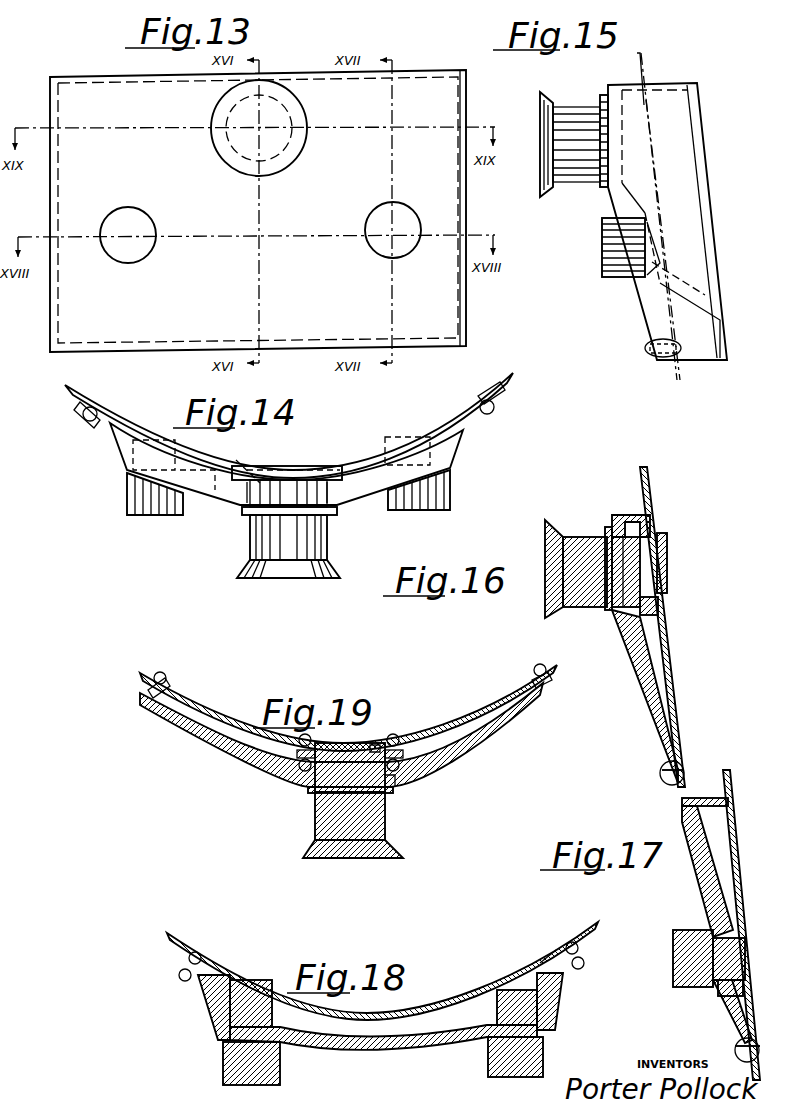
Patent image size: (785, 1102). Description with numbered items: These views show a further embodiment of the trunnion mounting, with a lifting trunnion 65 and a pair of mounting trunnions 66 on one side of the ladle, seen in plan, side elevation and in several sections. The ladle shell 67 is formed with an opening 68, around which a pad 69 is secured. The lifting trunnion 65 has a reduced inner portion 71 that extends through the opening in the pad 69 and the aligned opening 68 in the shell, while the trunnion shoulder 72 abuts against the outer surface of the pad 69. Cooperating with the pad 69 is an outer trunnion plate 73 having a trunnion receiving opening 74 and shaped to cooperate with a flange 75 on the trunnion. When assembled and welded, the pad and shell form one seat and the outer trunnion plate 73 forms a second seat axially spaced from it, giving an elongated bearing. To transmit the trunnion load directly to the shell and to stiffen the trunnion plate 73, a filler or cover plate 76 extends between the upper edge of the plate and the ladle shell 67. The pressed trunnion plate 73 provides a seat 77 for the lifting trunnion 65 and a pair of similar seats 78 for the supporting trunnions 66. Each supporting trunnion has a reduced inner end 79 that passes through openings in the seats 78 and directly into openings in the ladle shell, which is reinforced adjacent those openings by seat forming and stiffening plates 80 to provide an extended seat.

In FIG. 13, the lifting trunnion 65 is at (243, 143).
In FIG. 15, the lifting trunnion 65 is at (588, 86).
In FIG. 14, the lifting trunnion 65 is at (323, 530).
In FIG. 16, the lifting trunnion 65 is at (583, 600).
In FIG. 19, the lifting trunnion 65 is at (315, 823).
In FIG. 13, the mounting trunnion 66 is at (137, 246).
In FIG. 15, the mounting trunnion 66 is at (606, 247).
In FIG. 14, the mounting trunnion 66 is at (127, 495).
In FIG. 17, the mounting trunnion 66 is at (673, 933).
In FIG. 18, the mounting trunnion 66 is at (280, 1073).
In FIG. 15, the ladle shell 67 is at (658, 216).
In FIG. 14, the ladle shell 67 is at (510, 378).
In FIG. 16, the ladle shell 67 is at (668, 667).
In FIG. 17, the ladle shell 67 is at (730, 777).
In FIG. 19, the ladle shell 67 is at (500, 707).
In FIG. 18, the ladle shell 67 is at (475, 990).
In FIG. 19, the opening 68 is at (390, 740).
In FIG. 19, the pad 69 is at (297, 753).
In FIG. 19, the reduced inner portion 71 is at (377, 748).
In FIG. 19, the trunnion shoulder 72 is at (403, 755).
In FIG. 15, the outer trunnion plate 73 is at (657, 327).
In FIG. 14, the outer trunnion plate 73 is at (286, 464).
In FIG. 16, the outer trunnion plate 73 is at (650, 717).
In FIG. 17, the outer trunnion plate 73 is at (730, 1008).
In FIG. 19, the outer trunnion plate 73 is at (513, 728).
In FIG. 18, the outer trunnion plate 73 is at (413, 1052).
In FIG. 19, the trunnion receiving opening 74 is at (397, 787).
In FIG. 19, the flange 75 is at (310, 792).
In FIG. 16, the filler or cover plate 76 is at (640, 513).
In FIG. 17, the filler or cover plate 76 is at (728, 803).
In FIG. 16, the seat 77 is at (613, 613).
In FIG. 15, the seat 78 is at (652, 272).
In FIG. 17, the seat 78 is at (707, 927).
In FIG. 18, the seat 78 is at (493, 1037).
In FIG. 17, the reduced inner end 79 is at (747, 950).
In FIG. 17, the seat forming and stiffening plate 80 is at (747, 983).
In FIG. 18, the seat forming and stiffening plate 80 is at (558, 963).